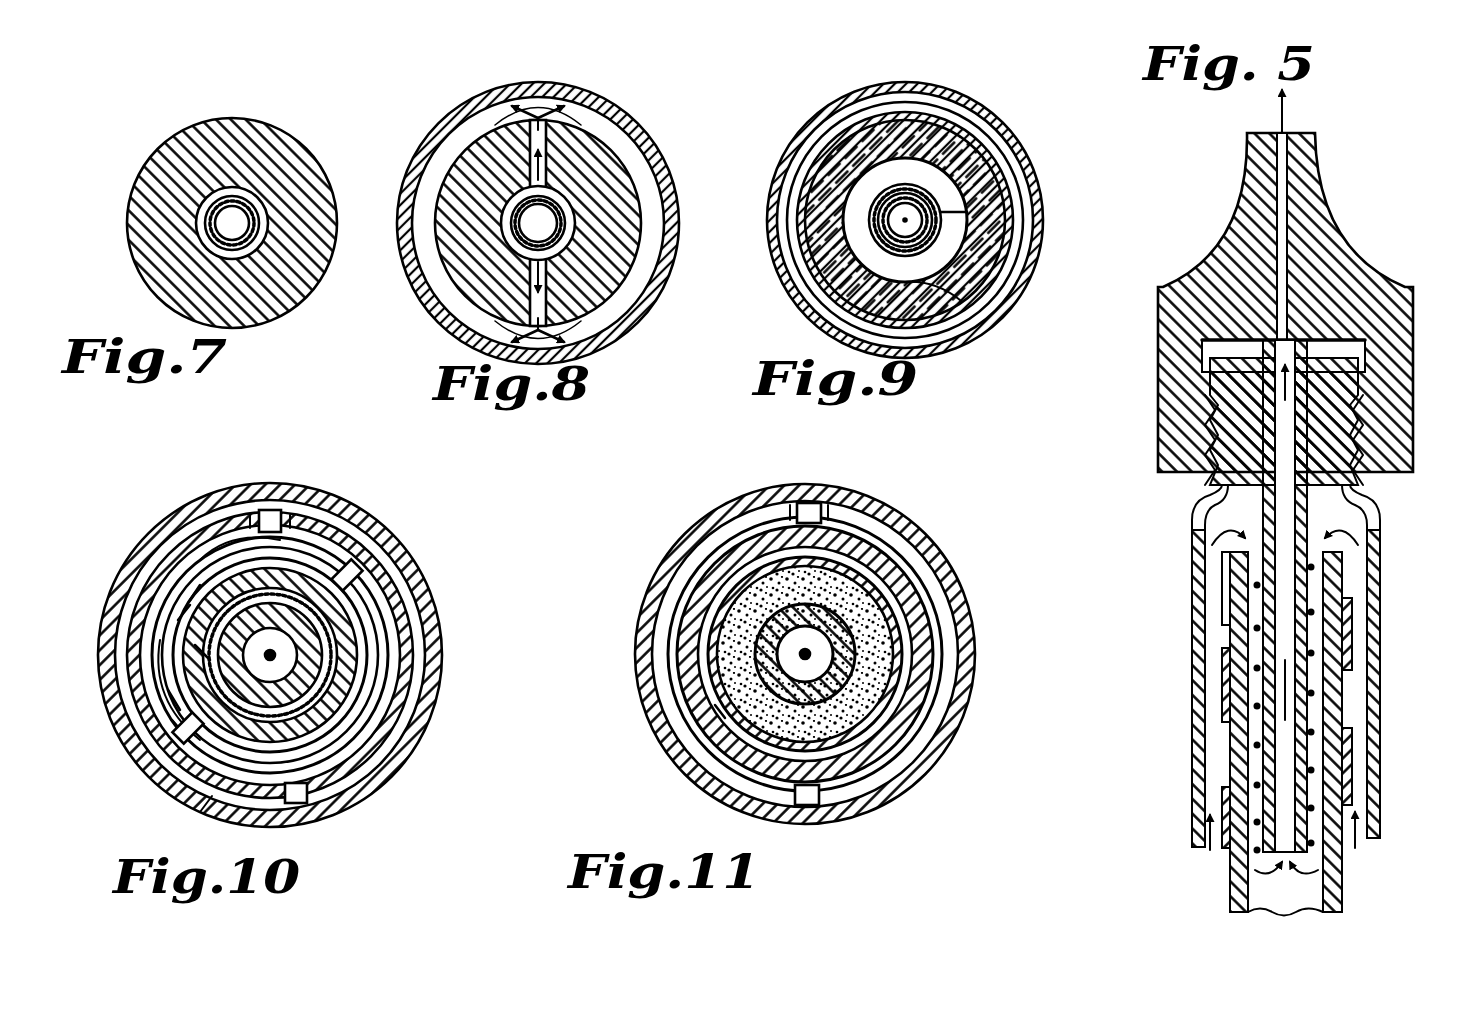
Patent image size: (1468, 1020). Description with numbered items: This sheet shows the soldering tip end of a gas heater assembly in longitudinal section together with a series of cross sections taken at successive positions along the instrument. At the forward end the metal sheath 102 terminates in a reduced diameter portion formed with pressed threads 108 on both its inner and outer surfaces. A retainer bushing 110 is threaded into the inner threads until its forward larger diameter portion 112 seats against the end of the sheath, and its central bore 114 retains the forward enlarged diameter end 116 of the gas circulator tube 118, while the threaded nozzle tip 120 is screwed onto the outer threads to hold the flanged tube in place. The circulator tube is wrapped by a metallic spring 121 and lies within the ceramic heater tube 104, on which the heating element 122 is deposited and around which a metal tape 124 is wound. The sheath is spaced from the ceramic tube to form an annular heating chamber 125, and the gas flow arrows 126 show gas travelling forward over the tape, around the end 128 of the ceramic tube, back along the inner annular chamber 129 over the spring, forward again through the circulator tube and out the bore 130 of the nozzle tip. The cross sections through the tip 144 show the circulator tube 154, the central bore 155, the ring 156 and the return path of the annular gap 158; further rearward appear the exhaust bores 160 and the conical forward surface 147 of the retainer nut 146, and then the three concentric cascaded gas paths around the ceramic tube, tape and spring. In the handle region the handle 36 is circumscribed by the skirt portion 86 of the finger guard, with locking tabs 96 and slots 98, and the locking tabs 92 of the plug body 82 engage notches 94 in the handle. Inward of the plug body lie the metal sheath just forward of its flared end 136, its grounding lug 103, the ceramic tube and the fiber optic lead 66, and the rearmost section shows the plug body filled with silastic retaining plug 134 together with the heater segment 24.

In FIG. 5, the deposited heater element segments 24 is at (1222, 688).
In FIG. 10, the handle 36 is at (340, 515).
In FIG. 11, the handle 36 is at (880, 515).
In FIG. 10, the fibre optic lead 66 is at (275, 665).
In FIG. 11, the fibre optic lead 66 is at (810, 660).
In FIG. 10, the plug body 82 is at (340, 612).
In FIG. 11, the plug body 82 is at (905, 570).
In FIG. 10, the skirt portion 86 is at (278, 512).
In FIG. 11, the skirt portion 86 is at (822, 500).
In FIG. 10, the locking tab 92 is at (365, 560).
In FIG. 10, the notch 94 is at (362, 574).
In FIG. 10, the locking tabs 96 is at (266, 510).
In FIG. 11, the locking tabs 96 is at (797, 506).
In FIG. 10, the slots 98 is at (300, 480).
In FIG. 11, the slots 98 is at (812, 500).
In FIG. 9, the metal sheath 102 is at (960, 95).
In FIG. 10, the metal sheath 102 is at (372, 642).
In FIG. 5, the metal sheath 102 is at (1380, 655).
In FIG. 10, the grounding lug 103 is at (195, 645).
In FIG. 11, the grounding lug 103 is at (715, 705).
In FIG. 9, the ceramic heater tube 104 is at (1005, 155).
In FIG. 10, the ceramic heater tube 104 is at (320, 662).
In FIG. 11, the ceramic heater tube 104 is at (842, 665).
In FIG. 5, the ceramic heater tube 104 is at (1342, 888).
In FIG. 5, the pressed threads 108 is at (1365, 437).
In FIG. 5, the retainer bushing 110 is at (1360, 500).
In FIG. 5, the forward larger diameter portion 112 is at (1340, 345).
In FIG. 5, the central bore 114 is at (1345, 400).
In FIG. 5, the forward enlarged diameter end 116 is at (1365, 330).
In FIG. 5, the gas circulator tube 118 is at (1218, 500).
In FIG. 5, the threaded nozzle tip 120 is at (1355, 265).
In FIG. 9, the metallic spring 121 is at (940, 212).
In FIG. 5, the metallic spring 121 is at (1258, 762).
In FIG. 5, the heating element 122 is at (1228, 615).
In FIG. 9, the metal tape 124 is at (830, 125).
In FIG. 9, the annular heating chamber 125 is at (893, 116).
In FIG. 5, the annular heating chamber 125 is at (1355, 710).
In FIG. 5, the gas flow arrows 126 is at (1215, 860).
In FIG. 5, the end of the ceramic tube 128 is at (1222, 560).
In FIG. 9, the inner annular chamber 129 is at (918, 265).
In FIG. 5, the inner annular chamber 129 is at (1262, 727).
In FIG. 5, the bore of the nozzle tip 130 is at (1318, 174).
In FIG. 11, the retaining plug 134 is at (870, 605).
In FIG. 10, the flared end 136 is at (200, 812).
In FIG. 7, the tip 144 is at (335, 123).
In FIG. 8, the tip 144 is at (640, 188).
In FIG. 8, the retainer nut 146 is at (616, 114).
In FIG. 8, the conical forward surface 147 is at (630, 160).
In FIG. 7, the circulator tube 154 is at (211, 194).
In FIG. 8, the circulator tube 154 is at (575, 222).
In FIG. 9, the circulator tube 154 is at (925, 245).
In FIG. 7, the bore 155 is at (217, 232).
In FIG. 8, the bore 155 is at (545, 227).
In FIG. 9, the bore 155 is at (907, 240).
In FIG. 7, the inner ring 156 is at (253, 200).
In FIG. 7, the annular gap 158 is at (258, 219).
In FIG. 8, the exhaust bores 160 is at (572, 113).